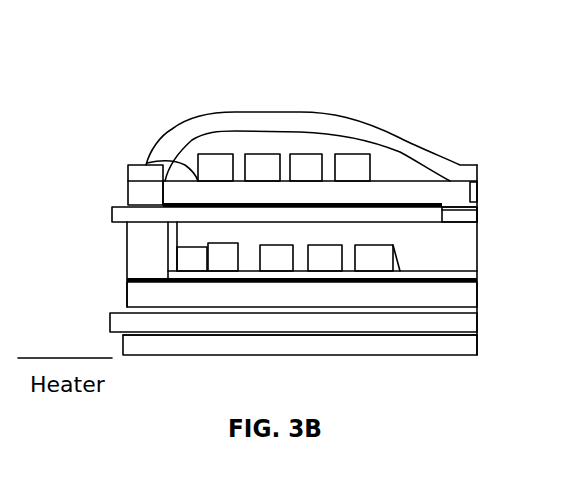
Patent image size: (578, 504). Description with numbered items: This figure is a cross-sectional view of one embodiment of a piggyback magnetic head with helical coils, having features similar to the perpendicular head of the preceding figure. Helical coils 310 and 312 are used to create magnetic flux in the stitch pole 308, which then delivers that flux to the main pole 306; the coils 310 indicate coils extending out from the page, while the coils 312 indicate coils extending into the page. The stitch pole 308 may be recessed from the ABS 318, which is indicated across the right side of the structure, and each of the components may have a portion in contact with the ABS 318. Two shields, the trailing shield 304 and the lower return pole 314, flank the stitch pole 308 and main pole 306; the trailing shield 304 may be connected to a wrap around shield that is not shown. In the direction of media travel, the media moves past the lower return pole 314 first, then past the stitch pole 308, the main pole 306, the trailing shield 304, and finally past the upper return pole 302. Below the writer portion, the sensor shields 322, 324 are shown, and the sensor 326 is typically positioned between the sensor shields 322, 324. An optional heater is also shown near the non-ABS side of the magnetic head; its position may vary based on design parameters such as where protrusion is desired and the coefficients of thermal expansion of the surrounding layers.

The upper return pole 302 is at (422, 137).
The trailing shield 304 is at (480, 193).
The main pole 306 is at (480, 212).
The stitch pole 308 is at (433, 223).
The helical coils 310 is at (147, 165).
The helical coils 312 is at (210, 243).
The lower return pole 314 is at (336, 301).
The ABS 318 is at (482, 282).
The sensor shield 322 is at (110, 313).
The sensor shield 324 is at (123, 343).
The sensor 326 is at (474, 331).